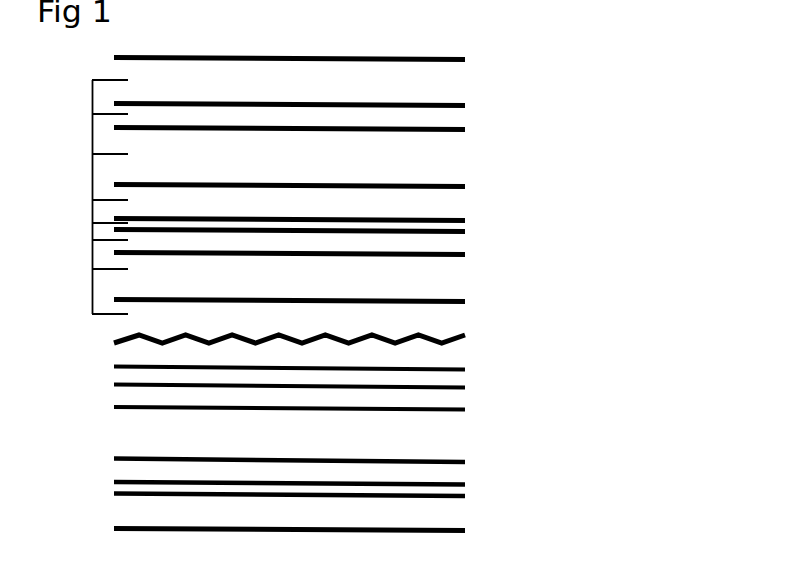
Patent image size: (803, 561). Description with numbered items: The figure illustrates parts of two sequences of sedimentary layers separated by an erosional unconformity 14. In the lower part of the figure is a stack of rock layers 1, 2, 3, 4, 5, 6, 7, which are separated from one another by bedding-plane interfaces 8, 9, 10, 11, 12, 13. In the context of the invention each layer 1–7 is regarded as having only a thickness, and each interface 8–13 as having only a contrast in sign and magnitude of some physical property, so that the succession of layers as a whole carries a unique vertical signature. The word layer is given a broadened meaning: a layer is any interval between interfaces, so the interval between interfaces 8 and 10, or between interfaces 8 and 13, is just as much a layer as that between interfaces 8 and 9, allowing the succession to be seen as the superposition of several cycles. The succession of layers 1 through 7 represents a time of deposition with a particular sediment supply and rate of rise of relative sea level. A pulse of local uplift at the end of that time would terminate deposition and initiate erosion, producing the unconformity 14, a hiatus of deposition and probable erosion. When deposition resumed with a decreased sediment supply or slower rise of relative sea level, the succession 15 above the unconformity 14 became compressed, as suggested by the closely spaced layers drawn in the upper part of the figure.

The rock layer 1 is at (128, 355).
The rock layer 2 is at (128, 378).
The rock layer 3 is at (128, 395).
The rock layer 4 is at (128, 435).
The rock layer 5 is at (128, 470).
The rock layer 6 is at (128, 488).
The rock layer 7 is at (128, 510).
The bedding-plane interface 8 is at (465, 370).
The bedding-plane interface 9 is at (465, 388).
The bedding-plane interface 10 is at (465, 410).
The bedding-plane interface 11 is at (465, 462).
The bedding-plane interface 12 is at (465, 484).
The bedding-plane interface 13 is at (465, 496).
The unconformity 14 is at (465, 335).
The succession above the unconformity 15 is at (92, 194).